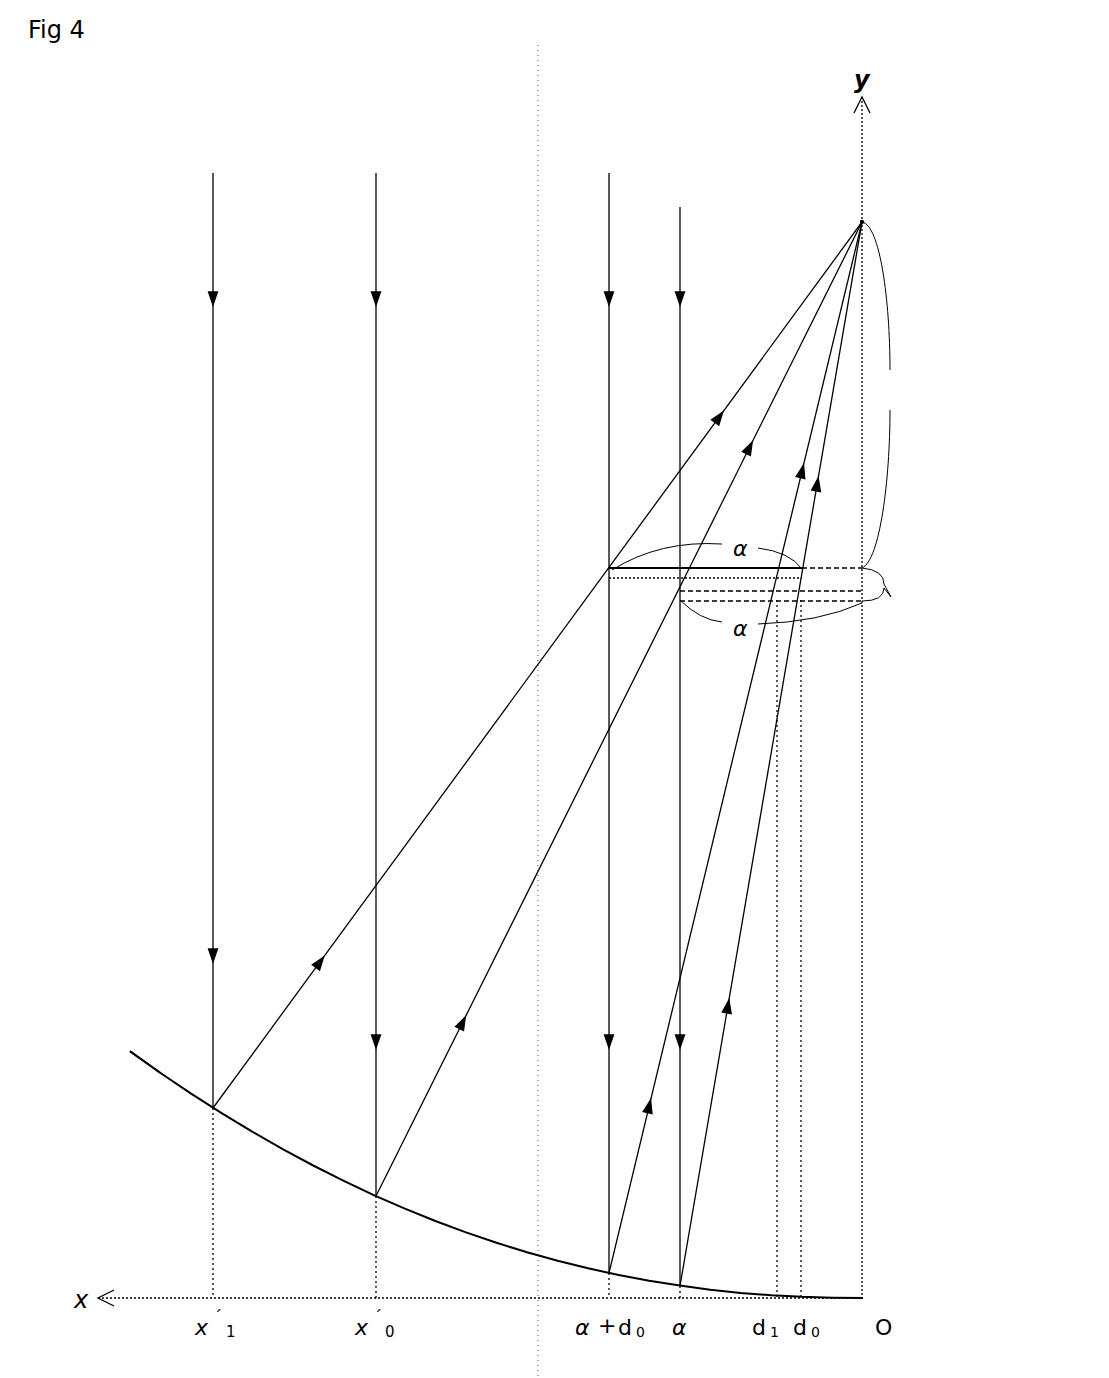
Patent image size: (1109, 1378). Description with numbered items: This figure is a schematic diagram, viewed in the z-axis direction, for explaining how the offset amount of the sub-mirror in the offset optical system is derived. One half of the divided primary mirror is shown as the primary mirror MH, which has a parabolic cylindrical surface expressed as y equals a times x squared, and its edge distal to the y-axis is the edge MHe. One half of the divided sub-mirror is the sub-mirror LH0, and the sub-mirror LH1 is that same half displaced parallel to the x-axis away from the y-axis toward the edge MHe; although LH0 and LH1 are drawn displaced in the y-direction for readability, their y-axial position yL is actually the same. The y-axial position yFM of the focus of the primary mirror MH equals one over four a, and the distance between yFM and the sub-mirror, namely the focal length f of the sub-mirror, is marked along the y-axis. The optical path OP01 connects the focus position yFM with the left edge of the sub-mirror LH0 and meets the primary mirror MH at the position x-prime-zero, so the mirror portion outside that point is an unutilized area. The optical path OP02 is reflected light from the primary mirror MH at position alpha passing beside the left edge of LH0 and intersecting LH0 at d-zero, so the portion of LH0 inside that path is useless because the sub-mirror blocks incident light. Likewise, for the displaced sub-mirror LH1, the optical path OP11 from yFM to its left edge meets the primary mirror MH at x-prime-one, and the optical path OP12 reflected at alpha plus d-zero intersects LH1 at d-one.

The primary mirror MH is at (178, 1086).
The edge of primary mirror MHe is at (170, 985).
The sub-mirror LH1 is at (625, 571).
The sub-mirror LH0 is at (685, 598).
The optical path OP11 is at (350, 922).
The optical path OP01 is at (478, 992).
The optical path OP12 is at (658, 1072).
The optical path OP02 is at (705, 1130).
The y-axial position of focus of primary mirror yFM is at (862, 222).
The focal length of sub-mirror f is at (876, 395).
The y-axial position of sub-mirror yL is at (891, 594).